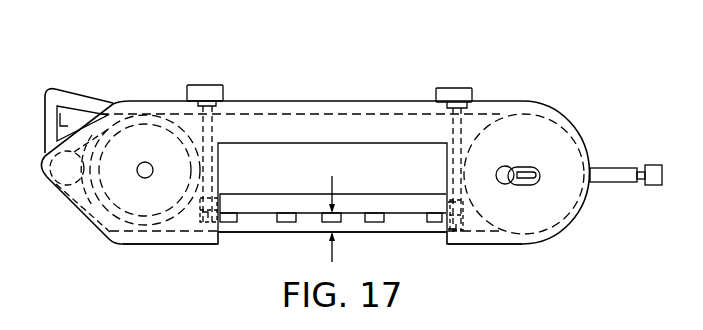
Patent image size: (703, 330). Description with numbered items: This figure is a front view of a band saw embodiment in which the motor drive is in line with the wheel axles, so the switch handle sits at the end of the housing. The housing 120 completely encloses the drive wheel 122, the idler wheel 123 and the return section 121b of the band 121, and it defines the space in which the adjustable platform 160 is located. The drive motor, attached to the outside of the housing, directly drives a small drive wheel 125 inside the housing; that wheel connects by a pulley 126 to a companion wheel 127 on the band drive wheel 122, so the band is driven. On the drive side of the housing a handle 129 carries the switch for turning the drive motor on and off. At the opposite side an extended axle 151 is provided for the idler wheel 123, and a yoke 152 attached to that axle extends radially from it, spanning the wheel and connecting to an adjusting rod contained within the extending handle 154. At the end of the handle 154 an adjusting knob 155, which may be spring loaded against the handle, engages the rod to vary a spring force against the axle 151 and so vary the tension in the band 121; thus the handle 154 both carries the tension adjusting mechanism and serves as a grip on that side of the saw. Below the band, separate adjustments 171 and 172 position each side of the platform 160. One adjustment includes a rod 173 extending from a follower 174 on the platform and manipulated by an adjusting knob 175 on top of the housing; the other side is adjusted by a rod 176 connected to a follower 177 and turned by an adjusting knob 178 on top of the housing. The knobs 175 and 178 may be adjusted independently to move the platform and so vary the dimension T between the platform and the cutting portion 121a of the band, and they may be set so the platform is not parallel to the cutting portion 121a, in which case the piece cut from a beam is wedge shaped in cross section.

The housing 120 is at (336, 100).
The band 121 is at (473, 236).
The cutting portion of the band 121a is at (250, 233).
The return section of the band 121b is at (417, 101).
The drive wheel 122 is at (122, 245).
The idler wheel 123 is at (546, 238).
The small drive wheel 125 is at (50, 199).
The pulley 126 is at (80, 218).
The companion wheel 127 is at (144, 239).
The handle 129 is at (48, 90).
The extended axle 151 is at (506, 167).
The yoke 152 is at (521, 167).
The extending handle 154 is at (612, 167).
The adjusting knob 155 is at (657, 164).
The platform 160 is at (305, 192).
The adjustment 171 is at (233, 82).
The adjustment 172 is at (476, 93).
The rod 173 is at (222, 155).
The follower 174 is at (225, 185).
The adjusting knob 175 is at (199, 84).
The rod 176 is at (447, 152).
The follower 177 is at (450, 190).
The adjusting knob 178 is at (457, 88).
The dimension T is at (335, 178).